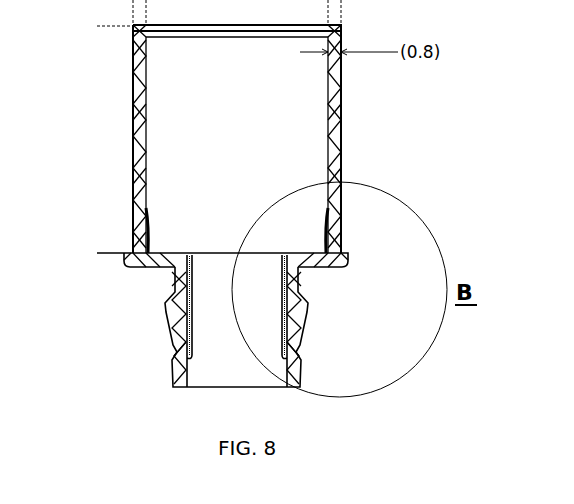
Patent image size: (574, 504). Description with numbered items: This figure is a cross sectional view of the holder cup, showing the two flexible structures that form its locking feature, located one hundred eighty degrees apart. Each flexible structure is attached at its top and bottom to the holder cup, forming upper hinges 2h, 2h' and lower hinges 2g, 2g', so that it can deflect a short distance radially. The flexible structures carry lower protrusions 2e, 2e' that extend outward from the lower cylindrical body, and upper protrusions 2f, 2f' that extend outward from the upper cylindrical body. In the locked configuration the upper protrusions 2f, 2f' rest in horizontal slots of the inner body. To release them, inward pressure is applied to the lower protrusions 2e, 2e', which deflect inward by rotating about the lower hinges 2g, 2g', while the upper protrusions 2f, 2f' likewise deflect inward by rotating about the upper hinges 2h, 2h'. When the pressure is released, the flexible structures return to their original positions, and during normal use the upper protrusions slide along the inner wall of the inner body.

The upper hinge 2h is at (417, 201).
The upper hinge 2h' is at (93, 230).
The upper protrusion 2f is at (376, 228).
The upper protrusion 2f' is at (133, 263).
The lower protrusion 2e is at (333, 321).
The lower protrusion 2e' is at (123, 321).
The lower hinge 2g is at (301, 327).
The lower hinge 2g' is at (152, 327).